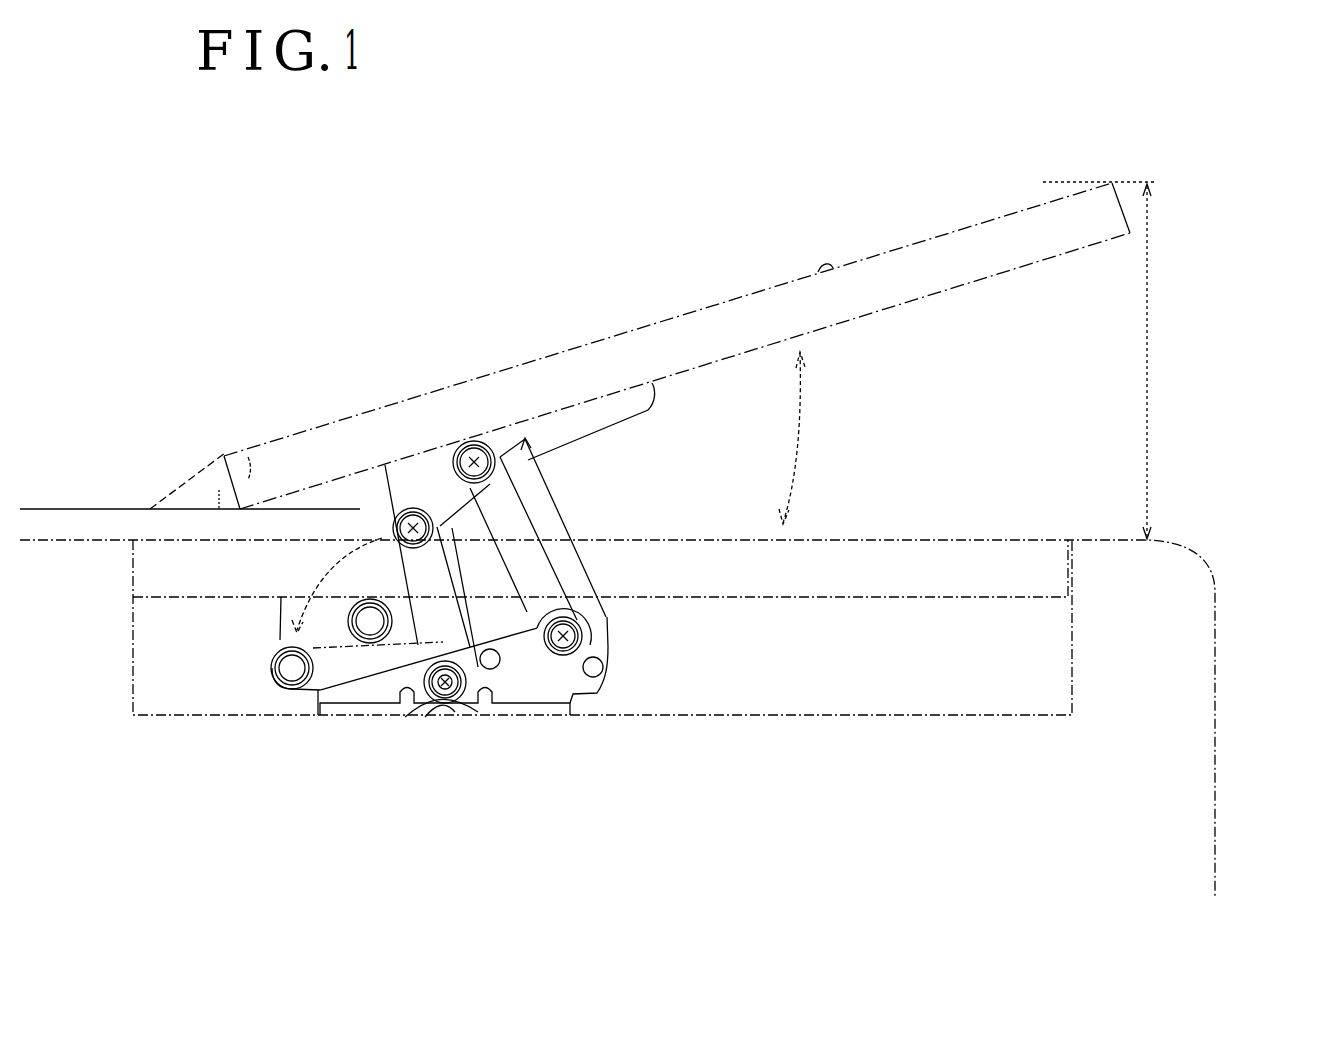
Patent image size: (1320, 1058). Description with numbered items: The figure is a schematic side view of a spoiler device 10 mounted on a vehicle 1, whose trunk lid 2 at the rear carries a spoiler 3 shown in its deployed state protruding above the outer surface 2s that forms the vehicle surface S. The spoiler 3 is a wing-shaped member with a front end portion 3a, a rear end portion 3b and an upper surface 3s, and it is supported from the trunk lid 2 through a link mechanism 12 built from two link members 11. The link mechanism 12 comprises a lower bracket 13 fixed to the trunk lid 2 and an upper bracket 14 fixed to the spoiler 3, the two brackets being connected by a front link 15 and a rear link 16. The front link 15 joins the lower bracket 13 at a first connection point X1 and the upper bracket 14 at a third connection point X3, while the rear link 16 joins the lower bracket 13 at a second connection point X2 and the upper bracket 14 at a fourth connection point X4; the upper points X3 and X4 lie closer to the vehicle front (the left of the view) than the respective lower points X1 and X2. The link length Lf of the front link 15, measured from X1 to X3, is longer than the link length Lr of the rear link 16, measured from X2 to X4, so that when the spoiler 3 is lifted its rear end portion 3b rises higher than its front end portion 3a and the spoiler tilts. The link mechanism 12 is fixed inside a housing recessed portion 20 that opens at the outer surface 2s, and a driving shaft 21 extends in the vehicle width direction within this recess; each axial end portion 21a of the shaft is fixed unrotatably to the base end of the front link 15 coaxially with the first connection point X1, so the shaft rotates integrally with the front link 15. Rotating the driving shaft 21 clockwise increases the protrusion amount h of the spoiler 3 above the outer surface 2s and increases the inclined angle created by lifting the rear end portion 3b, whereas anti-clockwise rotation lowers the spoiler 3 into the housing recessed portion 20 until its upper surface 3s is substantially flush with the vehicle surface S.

The vehicle 1 is at (669, 719).
The trunk lid 2 is at (1218, 772).
The vehicle surface S is at (190, 562).
The outer surface 2s is at (50, 542).
The spoiler 3 is at (689, 345).
The front end portion 3a is at (243, 450).
The rear end portion 3b is at (1114, 222).
The upper surface 3s is at (823, 270).
The spoiler device 10 is at (119, 157).
The link members 11 is at (455, 552).
The front link 15 is at (397, 582).
The rear link 16 is at (573, 552).
The link mechanism 12 is at (689, 628).
The lower bracket 13 is at (312, 693).
The upper bracket 14 is at (652, 386).
The housing recessed portion 20 is at (775, 716).
The driving shaft 21 is at (451, 746).
The axial end portion 21a is at (425, 717).
The first connection point X1 is at (456, 702).
The second connection point X2 is at (608, 650).
The third connection point X3 is at (412, 510).
The fourth connection point X4 is at (477, 450).
The link length of the front link Lf is at (491, 555).
The link length of the rear link Lr is at (550, 497).
The protrusion amount h is at (1152, 362).